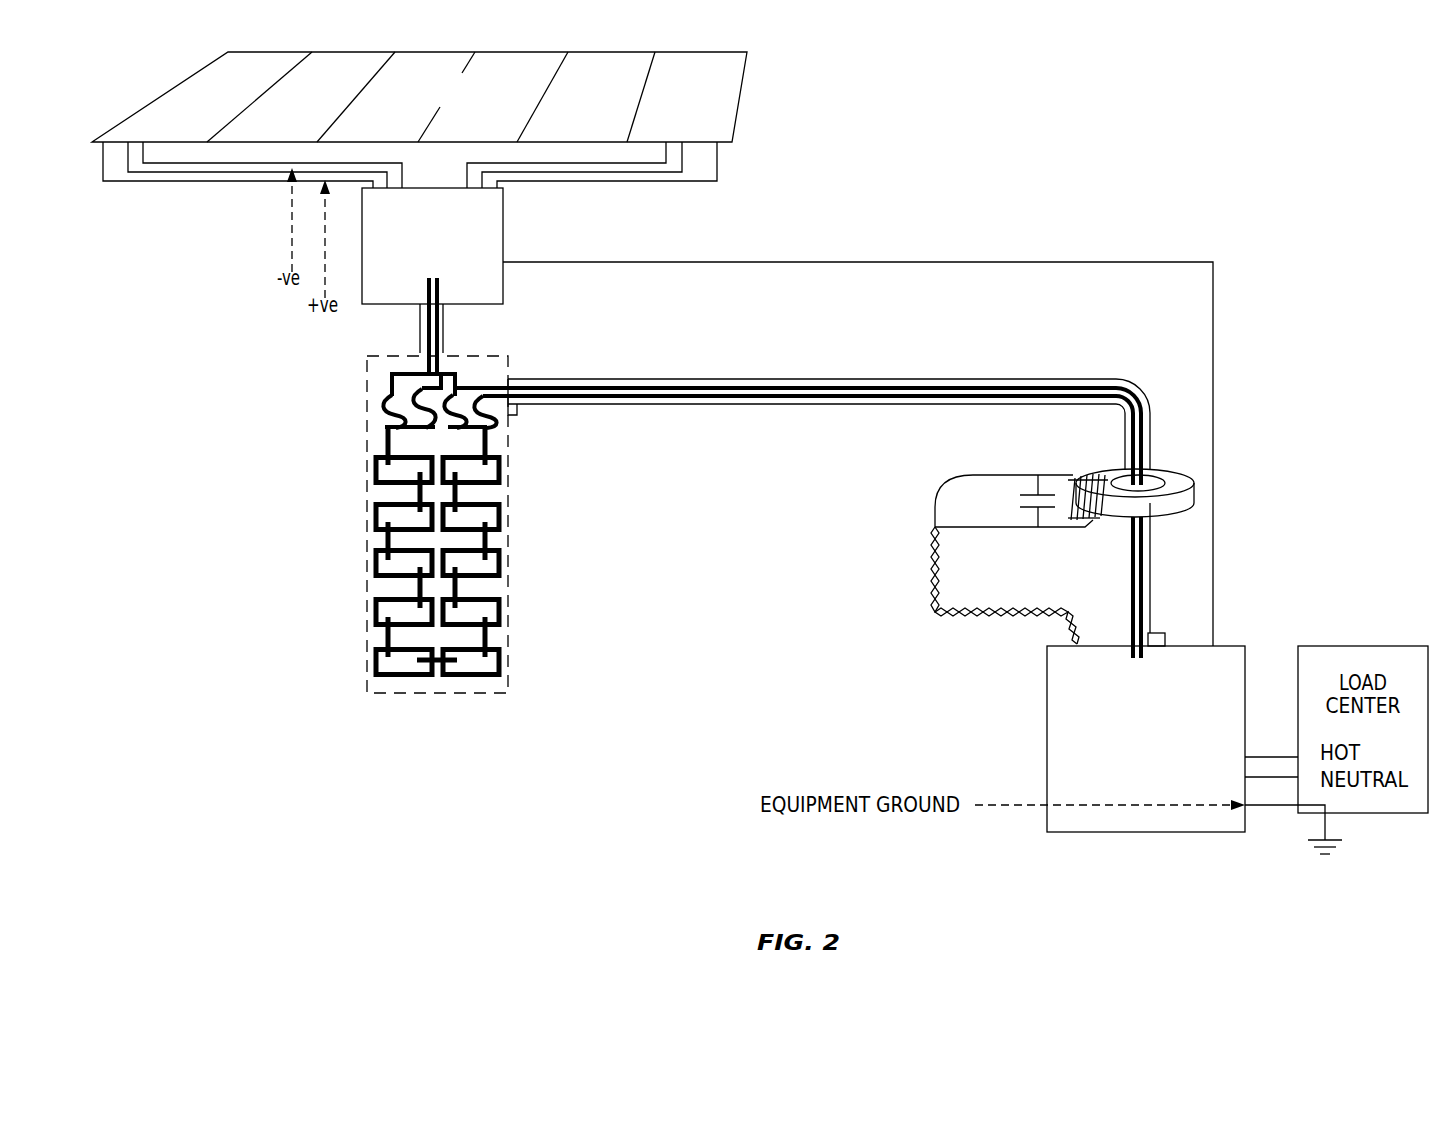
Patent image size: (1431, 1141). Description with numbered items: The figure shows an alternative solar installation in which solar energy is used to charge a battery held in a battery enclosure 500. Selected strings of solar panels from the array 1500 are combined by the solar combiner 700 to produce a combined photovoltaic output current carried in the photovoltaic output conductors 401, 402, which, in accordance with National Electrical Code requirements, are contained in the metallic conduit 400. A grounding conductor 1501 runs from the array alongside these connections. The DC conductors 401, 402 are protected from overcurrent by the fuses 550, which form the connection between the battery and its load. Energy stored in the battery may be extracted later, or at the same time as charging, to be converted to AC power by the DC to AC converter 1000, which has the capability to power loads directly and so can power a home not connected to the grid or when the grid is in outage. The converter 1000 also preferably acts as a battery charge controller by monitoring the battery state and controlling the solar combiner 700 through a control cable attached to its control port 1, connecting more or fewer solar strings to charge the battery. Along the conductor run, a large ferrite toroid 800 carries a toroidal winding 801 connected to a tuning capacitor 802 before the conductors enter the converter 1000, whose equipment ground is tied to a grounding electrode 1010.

The array 1500 is at (419, 97).
The grounding conductor 1501 is at (118, 190).
The solar combiner 700 is at (432, 282).
The control port 1 is at (1106, 253).
The battery enclosure 500 is at (352, 513).
The fuses 550 is at (362, 412).
The metallic conduit 400 is at (910, 372).
The photovoltaic output conductor 401 is at (830, 408).
The photovoltaic output conductor 402 is at (1055, 370).
The large ferrite toroid 800 is at (1182, 458).
The toroidal winding 801 is at (1061, 472).
The tuning capacitor 802 is at (1003, 502).
The DC to AC converter 1000 is at (1172, 739).
The grounding electrode 1010 is at (1286, 851).